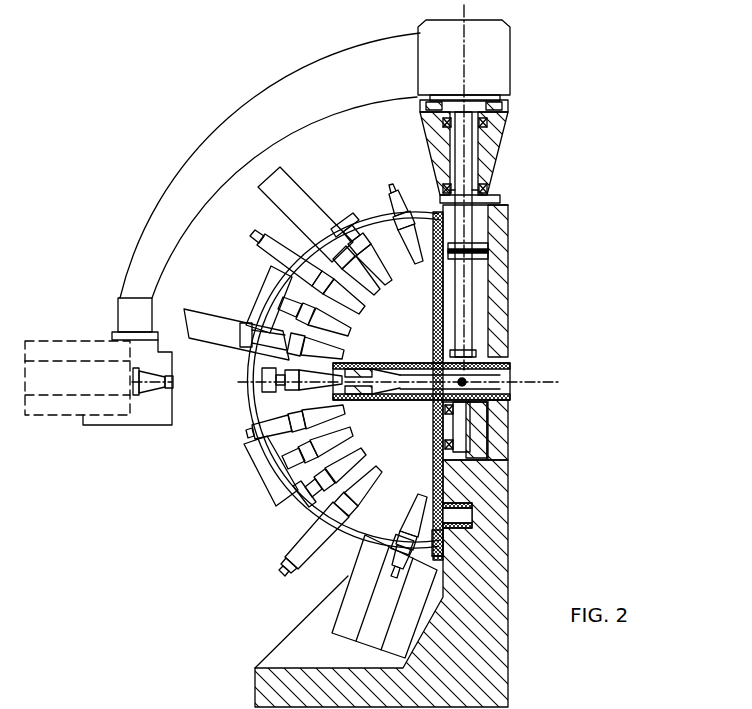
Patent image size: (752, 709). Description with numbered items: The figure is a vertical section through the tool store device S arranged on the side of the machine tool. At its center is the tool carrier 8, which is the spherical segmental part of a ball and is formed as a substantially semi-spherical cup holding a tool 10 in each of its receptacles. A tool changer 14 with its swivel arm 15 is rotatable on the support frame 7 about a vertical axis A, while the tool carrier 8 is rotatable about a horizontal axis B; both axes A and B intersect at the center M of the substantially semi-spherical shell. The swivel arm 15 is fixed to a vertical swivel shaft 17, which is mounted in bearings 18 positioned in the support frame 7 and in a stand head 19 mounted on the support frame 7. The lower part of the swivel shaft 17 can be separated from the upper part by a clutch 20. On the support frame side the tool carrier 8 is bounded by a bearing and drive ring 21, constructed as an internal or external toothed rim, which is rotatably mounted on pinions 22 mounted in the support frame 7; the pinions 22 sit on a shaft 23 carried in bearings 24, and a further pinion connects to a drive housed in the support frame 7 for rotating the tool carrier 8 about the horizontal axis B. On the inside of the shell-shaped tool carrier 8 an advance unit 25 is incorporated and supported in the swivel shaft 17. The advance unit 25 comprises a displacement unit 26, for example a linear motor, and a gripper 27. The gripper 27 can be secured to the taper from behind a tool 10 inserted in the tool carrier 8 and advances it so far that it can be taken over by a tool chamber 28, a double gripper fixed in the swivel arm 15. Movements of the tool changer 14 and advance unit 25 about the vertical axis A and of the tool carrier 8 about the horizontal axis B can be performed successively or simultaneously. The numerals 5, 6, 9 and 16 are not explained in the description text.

The vertical axis A is at (466, 47).
The store device S is at (303, 50).
The tool changer 14 is at (136, 226).
The swivel arm 15 is at (232, 128).
The tool chamber 28 is at (160, 424).
The horizontal axis B is at (391, 383).
The tool 9 is at (284, 394).
The gripper 27 is at (350, 400).
The advance unit 25 is at (512, 392).
The displacement unit 26 is at (500, 378).
The center M is at (460, 380).
The bearing plate 16 is at (426, 110).
The stand head 19 is at (442, 146).
The swivel shaft 17 is at (463, 296).
The bearings 18 is at (486, 130).
The column 5 is at (516, 218).
The clutch 20 is at (488, 250).
The support frame 7 is at (510, 457).
The pinions 22 is at (434, 520).
The bearings 24 is at (467, 505).
The shaft 23 is at (466, 516).
The bearing and drive ring 21 is at (438, 552).
The tool carrier 8 is at (360, 528).
The tool 10 is at (241, 461).
The base 6 is at (498, 676).